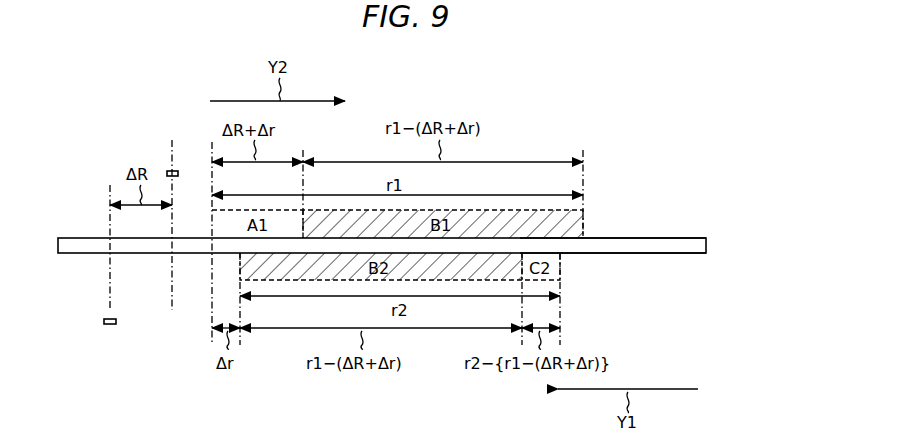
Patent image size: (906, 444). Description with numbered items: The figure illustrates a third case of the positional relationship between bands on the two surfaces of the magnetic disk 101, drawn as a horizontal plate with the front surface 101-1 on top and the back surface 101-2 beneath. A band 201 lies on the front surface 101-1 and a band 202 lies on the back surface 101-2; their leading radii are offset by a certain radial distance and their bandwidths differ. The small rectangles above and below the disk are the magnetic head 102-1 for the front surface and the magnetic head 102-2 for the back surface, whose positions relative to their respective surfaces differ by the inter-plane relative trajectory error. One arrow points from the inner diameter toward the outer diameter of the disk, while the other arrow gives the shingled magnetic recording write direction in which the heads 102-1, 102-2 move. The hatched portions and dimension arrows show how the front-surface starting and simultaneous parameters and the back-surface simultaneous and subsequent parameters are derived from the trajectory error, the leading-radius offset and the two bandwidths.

The magnetic disk 101 is at (707, 244).
The front surface 101-1 is at (681, 237).
The back surface 101-2 is at (681, 255).
The magnetic head for the front surface 102-1 is at (172, 170).
The magnetic head for the back surface 102-2 is at (110, 325).
The band 201 is at (584, 230).
The band 202 is at (561, 267).